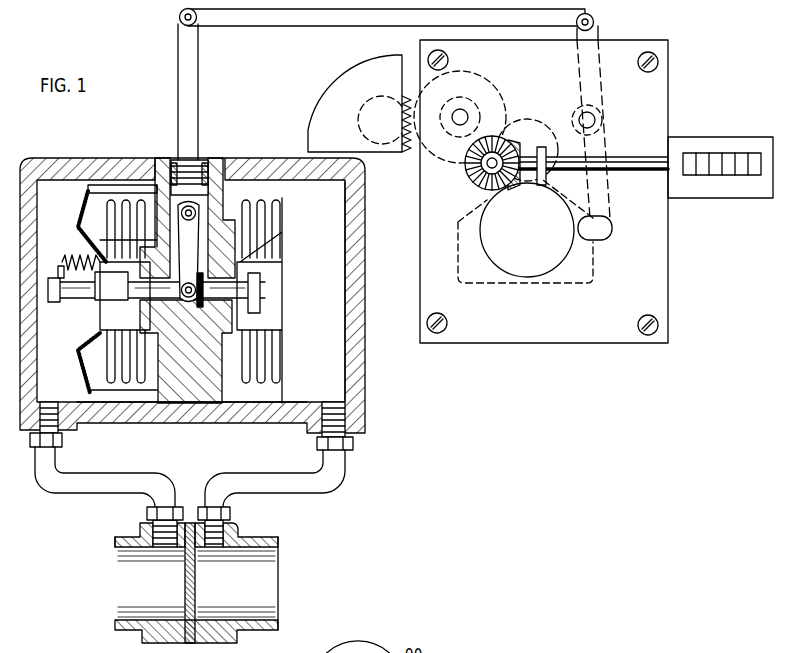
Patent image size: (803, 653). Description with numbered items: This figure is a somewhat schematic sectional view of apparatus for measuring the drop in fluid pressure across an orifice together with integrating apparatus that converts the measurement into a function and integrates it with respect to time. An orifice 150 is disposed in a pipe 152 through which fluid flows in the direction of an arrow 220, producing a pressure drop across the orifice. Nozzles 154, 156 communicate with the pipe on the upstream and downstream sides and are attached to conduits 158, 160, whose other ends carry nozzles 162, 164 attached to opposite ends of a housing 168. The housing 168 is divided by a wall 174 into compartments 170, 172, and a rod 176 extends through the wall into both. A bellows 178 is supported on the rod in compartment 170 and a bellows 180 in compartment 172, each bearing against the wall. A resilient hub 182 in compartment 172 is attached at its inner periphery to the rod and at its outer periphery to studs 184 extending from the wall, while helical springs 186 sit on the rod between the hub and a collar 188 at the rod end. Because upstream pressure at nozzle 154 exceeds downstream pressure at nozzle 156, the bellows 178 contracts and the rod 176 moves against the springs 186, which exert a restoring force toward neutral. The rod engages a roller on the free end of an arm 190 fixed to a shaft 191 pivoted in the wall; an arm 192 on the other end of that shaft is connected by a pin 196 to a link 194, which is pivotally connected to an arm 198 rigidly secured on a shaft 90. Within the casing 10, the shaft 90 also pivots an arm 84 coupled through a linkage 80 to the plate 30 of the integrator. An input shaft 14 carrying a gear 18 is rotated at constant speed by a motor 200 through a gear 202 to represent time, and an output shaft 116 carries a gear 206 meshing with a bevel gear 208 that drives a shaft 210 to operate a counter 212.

The casing 10 is at (665, 294).
The shaft 14 is at (464, 109).
The gear 18 is at (538, 137).
The plate 30 is at (570, 285).
The linkage 80 is at (610, 238).
The arm 84 is at (610, 204).
The shaft 90 is at (596, 118).
The output shaft 116 is at (478, 173).
The orifice 150 is at (185, 582).
The pipe 152 is at (117, 622).
The nozzle 154 is at (240, 537).
The nozzle 156 is at (137, 532).
The conduit 158 is at (330, 473).
The conduit 160 is at (63, 483).
The nozzle 162 is at (333, 410).
The nozzle 164 is at (62, 398).
The housing 168 is at (263, 423).
The compartment 170 is at (333, 370).
The compartment 172 is at (48, 193).
The wall 174 is at (198, 425).
The rod 176 is at (250, 290).
The bellows 178 is at (283, 222).
The bellows 180 is at (107, 365).
The hub 182 is at (83, 212).
The studs 184 is at (117, 187).
The helical springs 186 is at (82, 337).
The collar 188 is at (60, 267).
The arm 190 is at (166, 178).
The shaft 191 is at (197, 212).
The arm 192 is at (193, 130).
The link 194 is at (298, 20).
The pin 196 is at (180, 17).
The arm 198 is at (596, 29).
The motor 200 is at (337, 109).
The gear 202 is at (368, 103).
The gear 206 is at (485, 183).
The bevel gear 208 is at (513, 143).
The shaft 210 is at (628, 156).
The counter 212 is at (705, 143).
The arrow 220 is at (263, 583).